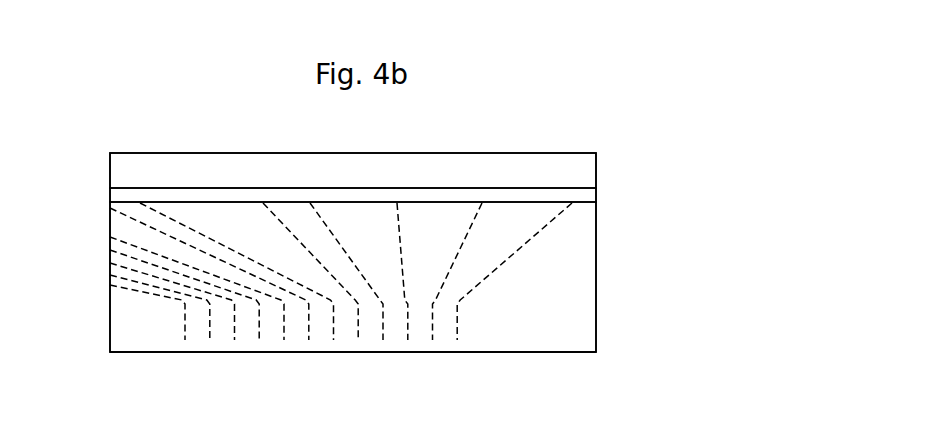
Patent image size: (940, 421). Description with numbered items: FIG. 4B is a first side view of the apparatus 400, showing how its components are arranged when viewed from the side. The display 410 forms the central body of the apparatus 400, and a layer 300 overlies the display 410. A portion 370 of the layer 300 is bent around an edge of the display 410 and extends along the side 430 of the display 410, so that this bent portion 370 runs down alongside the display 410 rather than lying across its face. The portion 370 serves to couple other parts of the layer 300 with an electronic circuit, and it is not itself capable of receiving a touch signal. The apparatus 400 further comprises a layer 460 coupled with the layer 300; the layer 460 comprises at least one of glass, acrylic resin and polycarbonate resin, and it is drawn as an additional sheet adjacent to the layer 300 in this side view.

The apparatus 400 is at (506, 208).
The layer 460 is at (597, 168).
The layer 300 is at (597, 195).
The display 410 is at (597, 235).
The portion 370 is at (520, 248).
The side 430 is at (562, 315).